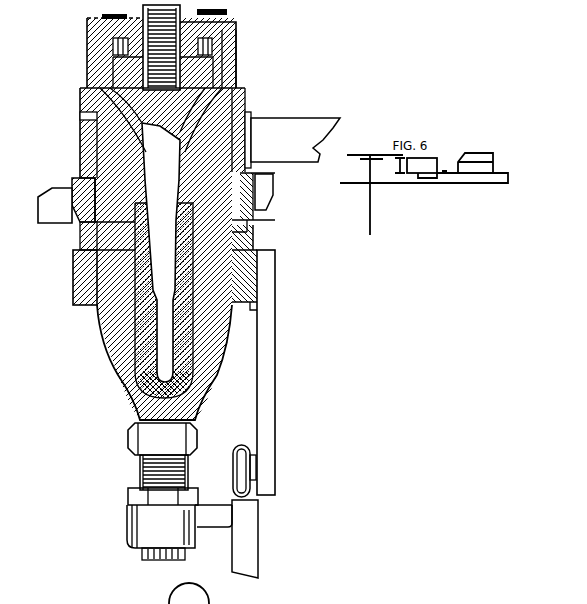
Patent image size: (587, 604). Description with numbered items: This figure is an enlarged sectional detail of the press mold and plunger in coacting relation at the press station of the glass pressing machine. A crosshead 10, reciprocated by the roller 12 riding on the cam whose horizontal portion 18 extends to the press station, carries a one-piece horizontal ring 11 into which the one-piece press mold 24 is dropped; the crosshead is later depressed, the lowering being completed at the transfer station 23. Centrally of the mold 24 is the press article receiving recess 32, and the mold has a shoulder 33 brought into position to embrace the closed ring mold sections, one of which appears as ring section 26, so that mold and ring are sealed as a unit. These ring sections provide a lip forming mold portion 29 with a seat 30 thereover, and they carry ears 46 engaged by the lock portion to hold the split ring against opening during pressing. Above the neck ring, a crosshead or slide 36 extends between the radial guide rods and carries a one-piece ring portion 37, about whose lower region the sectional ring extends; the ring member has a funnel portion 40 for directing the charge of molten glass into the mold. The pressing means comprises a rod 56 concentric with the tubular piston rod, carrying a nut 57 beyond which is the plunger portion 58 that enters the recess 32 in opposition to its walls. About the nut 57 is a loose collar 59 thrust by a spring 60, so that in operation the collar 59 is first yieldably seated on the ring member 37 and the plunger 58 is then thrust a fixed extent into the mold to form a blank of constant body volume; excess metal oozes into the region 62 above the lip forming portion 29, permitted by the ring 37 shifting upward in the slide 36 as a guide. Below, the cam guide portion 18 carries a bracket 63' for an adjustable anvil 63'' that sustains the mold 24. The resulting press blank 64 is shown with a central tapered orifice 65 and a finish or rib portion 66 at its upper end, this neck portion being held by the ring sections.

The crosshead 10 is at (277, 318).
The horizontal ring 11 is at (85, 308).
The roller 12 is at (240, 446).
The horizontal portion of the cam 18 is at (235, 500).
The transfer station 23 is at (189, 593).
The one-piece press mold 24 is at (112, 385).
The ring mold section 26 is at (270, 184).
The lip forming mold portion 29 is at (276, 260).
The seat 30 is at (248, 228).
The press article receiving recess 32 is at (193, 382).
The shoulder 33 is at (265, 220).
The crosshead or slide 36 is at (263, 117).
The ring portion 37 is at (246, 102).
The funnel portion 40 is at (235, 77).
The ears 46 is at (38, 222).
The rod 56 is at (222, 9).
The nut 57 is at (233, 51).
The plunger portion 58 is at (123, 400).
The loose collar 59 is at (237, 63).
The spring 60 is at (235, 33).
The region 62 is at (140, 210).
The bracket 63' is at (175, 533).
The adjustable anvil 63'' is at (138, 471).
The press blank 64 is at (192, 408).
The central orifice or tapered portion 65 is at (192, 360).
The finish or rib portion 66 is at (72, 192).